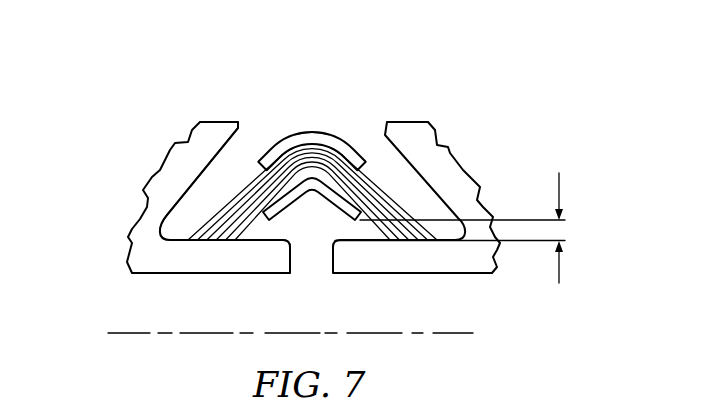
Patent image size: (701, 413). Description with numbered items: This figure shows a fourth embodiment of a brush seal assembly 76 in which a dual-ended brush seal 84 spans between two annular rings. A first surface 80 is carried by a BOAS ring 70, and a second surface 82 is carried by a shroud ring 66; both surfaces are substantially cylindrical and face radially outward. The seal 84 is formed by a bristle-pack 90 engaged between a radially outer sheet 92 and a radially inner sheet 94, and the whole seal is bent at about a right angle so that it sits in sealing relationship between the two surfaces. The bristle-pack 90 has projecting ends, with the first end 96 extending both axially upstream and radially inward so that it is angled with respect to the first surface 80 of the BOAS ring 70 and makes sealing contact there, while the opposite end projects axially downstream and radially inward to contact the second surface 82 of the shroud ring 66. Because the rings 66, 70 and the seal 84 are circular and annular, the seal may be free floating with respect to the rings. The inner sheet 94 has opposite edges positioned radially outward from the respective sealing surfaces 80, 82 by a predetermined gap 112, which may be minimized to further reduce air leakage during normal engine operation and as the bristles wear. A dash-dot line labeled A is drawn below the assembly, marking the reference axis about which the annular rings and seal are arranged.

The BOAS ring 70 is at (122, 239).
The shroud ring 66 is at (488, 174).
The second surface 82 is at (175, 239).
The bristle-pack 90 is at (382, 182).
The radially outer sheet 92 is at (288, 137).
The dual-ended brush seal 84 is at (315, 123).
The radially inner sheet 94 is at (343, 205).
The first surface 80 is at (270, 239).
The first end 96 is at (220, 242).
The brush seal assembly 76 is at (462, 75).
The gap 112 is at (559, 274).
The axis A is at (447, 333).